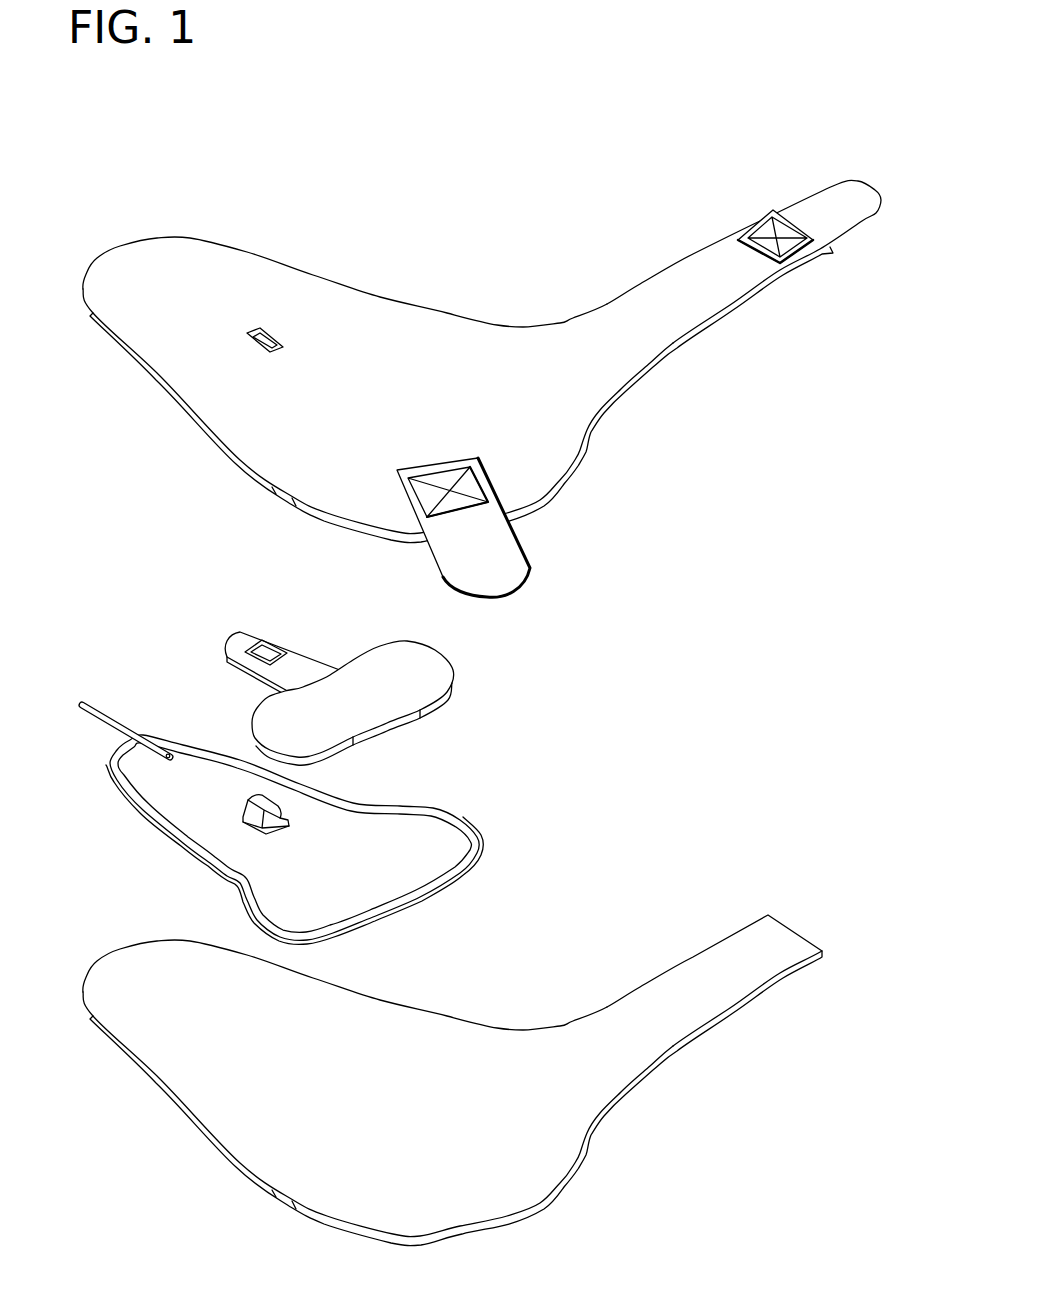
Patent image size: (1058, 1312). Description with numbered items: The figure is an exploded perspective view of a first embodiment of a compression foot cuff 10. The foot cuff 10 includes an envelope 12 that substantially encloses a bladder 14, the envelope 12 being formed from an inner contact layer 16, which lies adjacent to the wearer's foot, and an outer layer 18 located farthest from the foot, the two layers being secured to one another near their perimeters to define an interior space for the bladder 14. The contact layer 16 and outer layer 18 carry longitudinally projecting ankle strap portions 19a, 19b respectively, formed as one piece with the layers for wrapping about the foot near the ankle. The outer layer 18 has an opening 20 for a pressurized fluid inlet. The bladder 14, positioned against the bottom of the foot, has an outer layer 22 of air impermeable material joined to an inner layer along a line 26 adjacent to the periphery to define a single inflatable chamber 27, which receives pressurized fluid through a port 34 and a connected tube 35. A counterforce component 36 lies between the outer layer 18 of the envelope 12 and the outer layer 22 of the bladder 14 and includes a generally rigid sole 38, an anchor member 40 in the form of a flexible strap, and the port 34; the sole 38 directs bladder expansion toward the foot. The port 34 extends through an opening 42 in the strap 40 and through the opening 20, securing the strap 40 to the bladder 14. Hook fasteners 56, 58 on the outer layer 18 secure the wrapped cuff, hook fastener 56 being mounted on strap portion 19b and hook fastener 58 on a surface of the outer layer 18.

The foot cuff 10 is at (648, 112).
The envelope 12 is at (657, 428).
The bladder 14 is at (123, 603).
The inner contact layer 16 is at (175, 1100).
The outer layer 18 is at (183, 405).
The ankle strap portion 19a is at (747, 945).
The ankle strap portion 19b is at (670, 288).
The opening 20 is at (267, 343).
The outer layer of bladder 22 is at (160, 735).
The line 26 is at (142, 800).
The inflatable chamber 27 is at (430, 843).
The port 34 is at (243, 797).
The tube 35 is at (100, 703).
The counterforce component 36 is at (460, 658).
The sole 38 is at (442, 703).
The anchor member 40 is at (308, 658).
The opening 42 is at (270, 650).
The hook fastener 56 is at (513, 573).
The hook fastener 58 is at (813, 207).